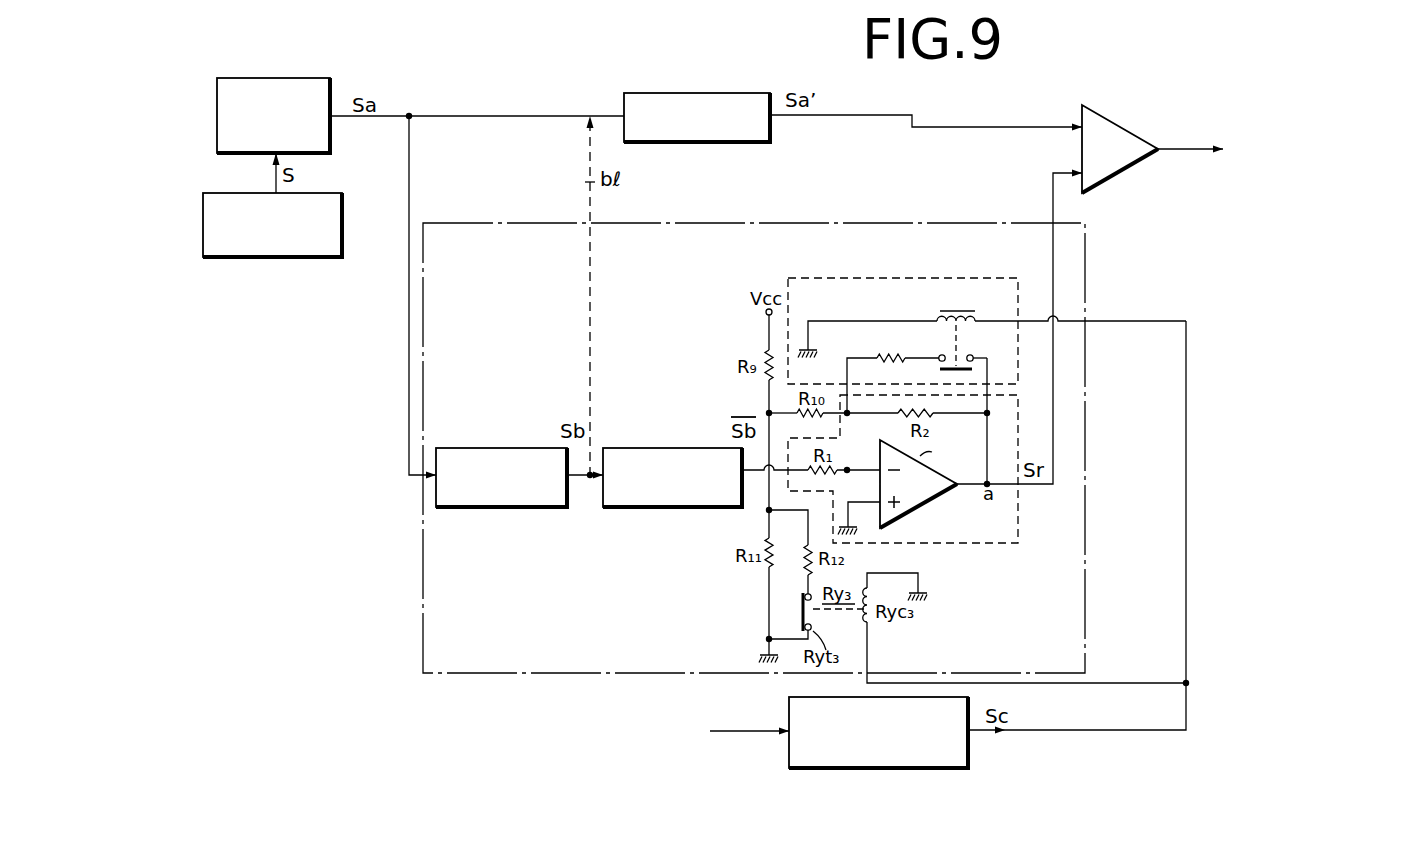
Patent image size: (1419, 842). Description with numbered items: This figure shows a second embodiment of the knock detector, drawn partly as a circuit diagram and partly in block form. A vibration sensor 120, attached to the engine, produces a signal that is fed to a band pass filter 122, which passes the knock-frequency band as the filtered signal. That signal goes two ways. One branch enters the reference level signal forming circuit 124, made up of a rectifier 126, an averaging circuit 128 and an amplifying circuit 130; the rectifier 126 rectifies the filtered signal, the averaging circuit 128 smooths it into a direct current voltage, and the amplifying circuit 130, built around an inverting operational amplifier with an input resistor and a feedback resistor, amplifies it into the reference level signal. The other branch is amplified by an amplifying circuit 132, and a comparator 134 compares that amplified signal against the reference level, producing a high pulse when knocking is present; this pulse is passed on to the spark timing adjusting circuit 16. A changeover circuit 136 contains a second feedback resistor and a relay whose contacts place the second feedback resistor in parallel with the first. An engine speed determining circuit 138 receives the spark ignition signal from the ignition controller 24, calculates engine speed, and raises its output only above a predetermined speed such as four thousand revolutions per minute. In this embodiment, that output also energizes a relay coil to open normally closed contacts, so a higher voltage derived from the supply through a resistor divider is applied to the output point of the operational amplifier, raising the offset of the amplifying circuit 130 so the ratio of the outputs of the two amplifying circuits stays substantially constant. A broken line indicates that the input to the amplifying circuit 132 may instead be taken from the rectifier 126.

The spark timing adjusting circuit 16 is at (1315, 156).
The ignition controller 24 is at (658, 726).
The vibration sensor 120 is at (325, 257).
The band pass filter 122 is at (305, 78).
The reference level signal forming circuit 124 is at (523, 263).
The rectifier 126 is at (525, 448).
The averaging circuit 128 is at (683, 448).
The amplifying circuit 130 is at (1018, 505).
The amplifying circuit 132 is at (698, 93).
The comparator 134 is at (1122, 124).
The changeover circuit 136 is at (902, 278).
The engine speed determining circuit 138 is at (789, 712).